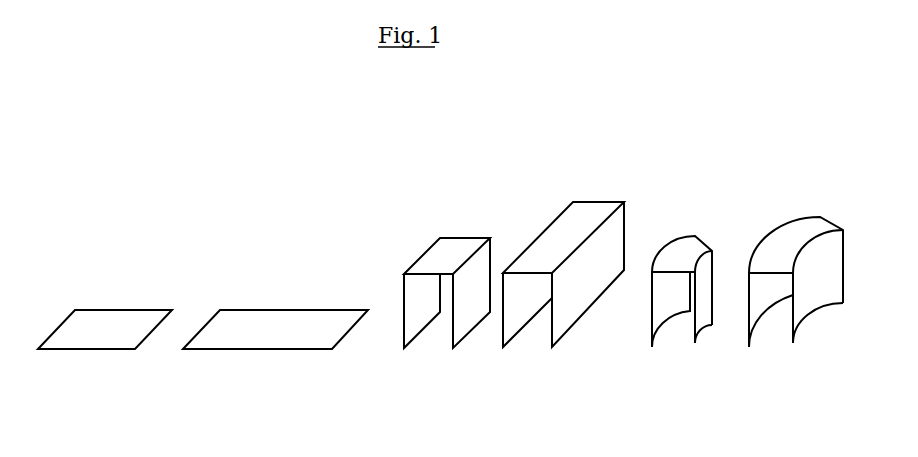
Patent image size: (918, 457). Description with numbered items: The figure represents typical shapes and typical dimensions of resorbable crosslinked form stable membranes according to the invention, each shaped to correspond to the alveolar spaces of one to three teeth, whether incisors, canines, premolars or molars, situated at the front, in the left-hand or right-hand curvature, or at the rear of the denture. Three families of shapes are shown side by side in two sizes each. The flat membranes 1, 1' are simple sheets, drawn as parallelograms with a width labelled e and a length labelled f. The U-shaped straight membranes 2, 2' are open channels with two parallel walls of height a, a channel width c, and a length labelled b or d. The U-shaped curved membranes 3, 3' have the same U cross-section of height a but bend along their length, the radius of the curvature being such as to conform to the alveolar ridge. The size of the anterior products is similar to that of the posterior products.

The flat membrane 1 is at (105, 364).
The flat membrane 1' is at (275, 364).
The U-shaped straight membrane 2 is at (441, 328).
The U-shaped straight membrane 2' is at (558, 310).
The U-shaped curved membrane 3 is at (676, 334).
The U-shaped curved membrane 3' is at (792, 325).